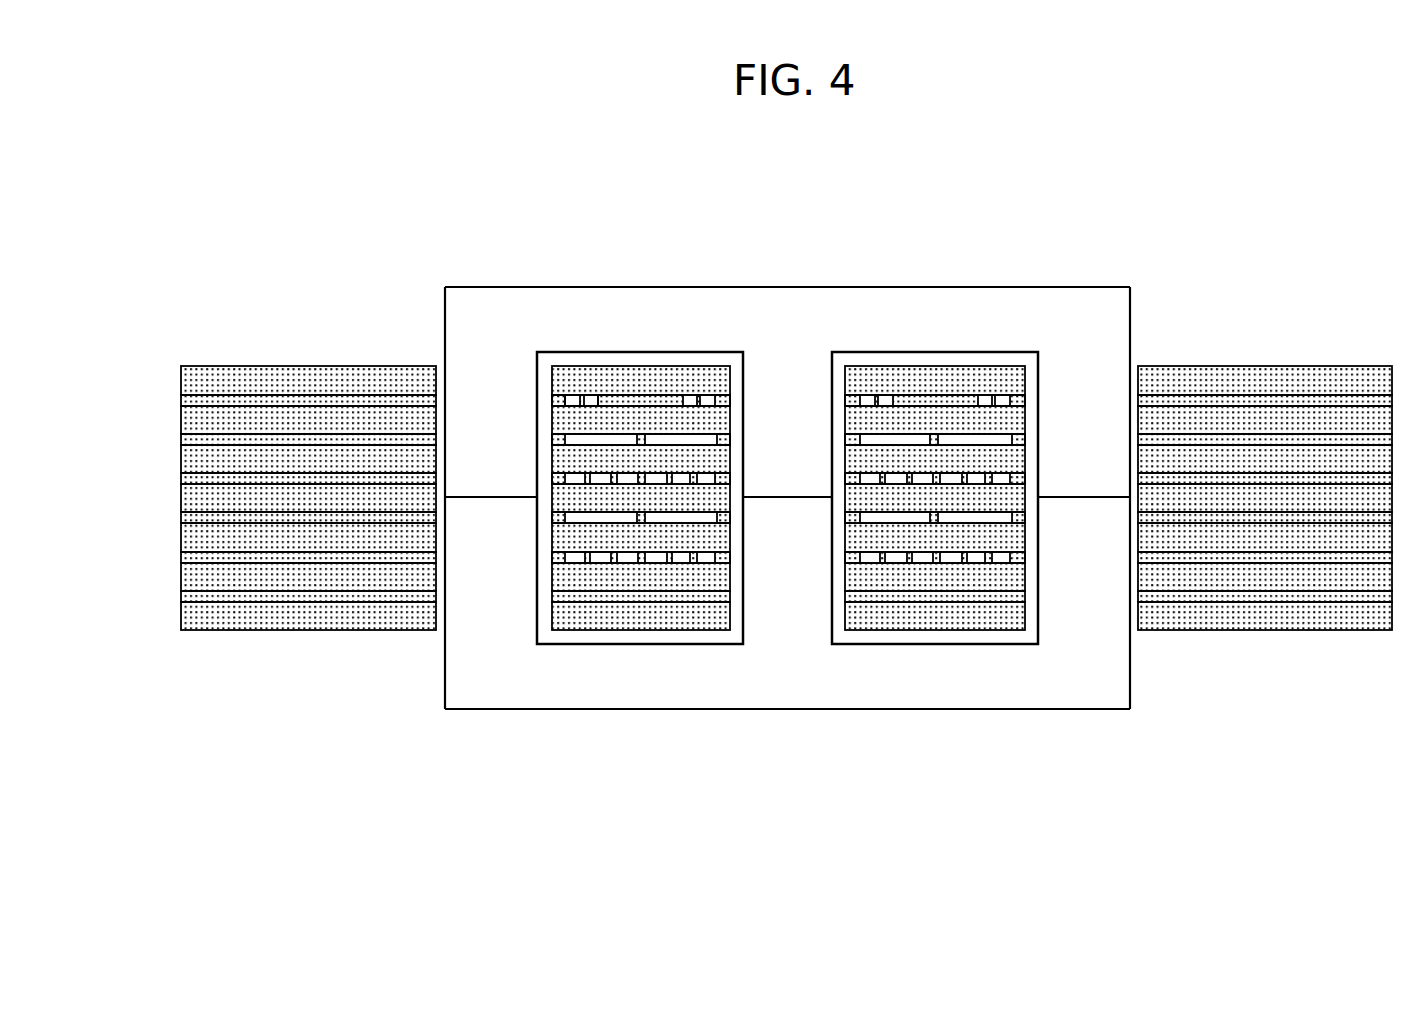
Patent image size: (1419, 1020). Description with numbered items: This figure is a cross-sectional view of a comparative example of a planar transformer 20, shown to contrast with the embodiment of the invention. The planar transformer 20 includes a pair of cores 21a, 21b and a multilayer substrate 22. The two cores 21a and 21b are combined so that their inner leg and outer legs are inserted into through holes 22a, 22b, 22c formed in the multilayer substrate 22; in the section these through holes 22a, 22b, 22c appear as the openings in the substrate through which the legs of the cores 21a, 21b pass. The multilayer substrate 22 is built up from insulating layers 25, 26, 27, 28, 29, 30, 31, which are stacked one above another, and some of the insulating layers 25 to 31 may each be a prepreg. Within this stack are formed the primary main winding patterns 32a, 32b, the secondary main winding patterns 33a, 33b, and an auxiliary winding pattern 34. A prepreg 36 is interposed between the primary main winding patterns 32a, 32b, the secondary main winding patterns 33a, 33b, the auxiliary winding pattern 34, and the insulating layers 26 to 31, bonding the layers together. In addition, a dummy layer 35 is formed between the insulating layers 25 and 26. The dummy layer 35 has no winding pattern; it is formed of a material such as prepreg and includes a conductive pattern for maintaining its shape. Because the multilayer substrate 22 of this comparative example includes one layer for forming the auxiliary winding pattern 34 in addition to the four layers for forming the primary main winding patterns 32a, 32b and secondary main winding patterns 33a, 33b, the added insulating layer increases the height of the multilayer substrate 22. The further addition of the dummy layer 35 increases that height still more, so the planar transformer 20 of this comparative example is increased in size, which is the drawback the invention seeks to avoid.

The planar transformer 20 is at (1375, 130).
The core 21a is at (495, 287).
The core 21b is at (445, 673).
The multilayer substrate 22 is at (170, 629).
The through hole 22a is at (437, 357).
The through hole 22b is at (838, 362).
The through hole 22c is at (1262, 474).
The insulating layer 25 is at (1153, 617).
The insulating layer 26 is at (1177, 582).
The insulating layer 27 is at (1203, 542).
The insulating layer 28 is at (1245, 503).
The insulating layer 29 is at (1247, 463).
The insulating layer 30 is at (1190, 422).
The insulating layer 31 is at (1168, 380).
The primary main winding pattern 32a is at (578, 563).
The primary main winding pattern 32b is at (628, 485).
The secondary main winding pattern 33a is at (573, 527).
The secondary main winding pattern 33b is at (658, 446).
The auxiliary winding pattern 34 is at (592, 395).
The dummy layer 35 is at (555, 593).
The prepreg 36 is at (658, 395).